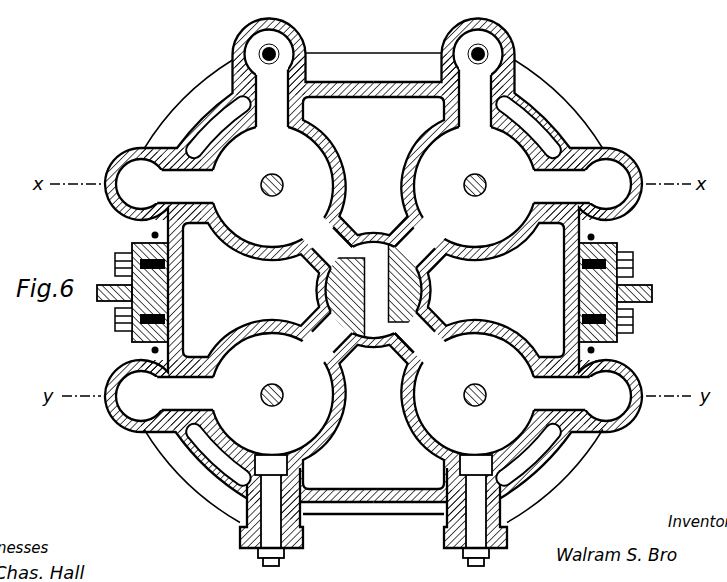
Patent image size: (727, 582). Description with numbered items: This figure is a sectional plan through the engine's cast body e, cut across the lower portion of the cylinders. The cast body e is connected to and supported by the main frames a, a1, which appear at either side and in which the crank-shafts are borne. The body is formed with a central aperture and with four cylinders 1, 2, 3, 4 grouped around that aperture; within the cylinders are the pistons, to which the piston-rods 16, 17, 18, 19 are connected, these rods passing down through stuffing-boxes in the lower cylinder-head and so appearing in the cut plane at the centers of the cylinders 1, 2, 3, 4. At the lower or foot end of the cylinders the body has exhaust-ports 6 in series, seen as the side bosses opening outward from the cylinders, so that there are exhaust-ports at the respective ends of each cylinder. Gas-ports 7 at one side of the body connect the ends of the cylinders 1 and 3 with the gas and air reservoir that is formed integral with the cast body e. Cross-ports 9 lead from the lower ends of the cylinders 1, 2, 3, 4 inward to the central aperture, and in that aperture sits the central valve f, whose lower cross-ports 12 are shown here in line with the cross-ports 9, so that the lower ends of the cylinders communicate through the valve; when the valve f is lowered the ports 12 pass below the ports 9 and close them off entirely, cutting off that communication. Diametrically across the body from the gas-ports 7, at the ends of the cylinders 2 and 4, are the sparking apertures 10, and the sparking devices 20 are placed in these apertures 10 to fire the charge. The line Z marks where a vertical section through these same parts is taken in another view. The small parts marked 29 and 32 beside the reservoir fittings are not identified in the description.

The cylinder 1 is at (324, 148).
The cylinder 2 is at (232, 348).
The cylinder 3 is at (516, 134).
The cylinder 4 is at (515, 357).
The exhaust-ports 6 is at (373, 290).
The gas-ports 7 is at (374, 74).
The cross-ports 9 is at (328, 241).
The sparking apertures 10 is at (274, 466).
The lower cross-ports 12 is at (374, 290).
The piston-rod 16 is at (265, 191).
The piston-rod 17 is at (264, 399).
The piston-rod 18 is at (488, 185).
The piston-rod 19 is at (489, 398).
The sparking devices 20 is at (284, 555).
The upper screw 29 is at (150, 235).
The lower screw 32 is at (150, 350).
The main frame a is at (118, 300).
The main frame a1 is at (624, 302).
The cast body e is at (563, 120).
The central valve f is at (397, 304).
The section line z z Z is at (318, 225).